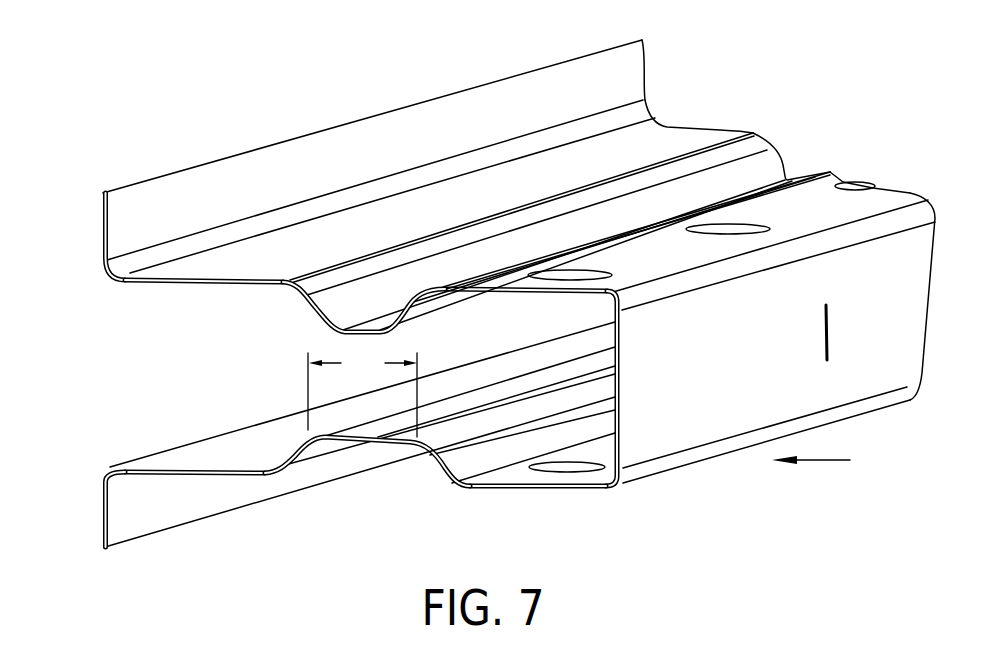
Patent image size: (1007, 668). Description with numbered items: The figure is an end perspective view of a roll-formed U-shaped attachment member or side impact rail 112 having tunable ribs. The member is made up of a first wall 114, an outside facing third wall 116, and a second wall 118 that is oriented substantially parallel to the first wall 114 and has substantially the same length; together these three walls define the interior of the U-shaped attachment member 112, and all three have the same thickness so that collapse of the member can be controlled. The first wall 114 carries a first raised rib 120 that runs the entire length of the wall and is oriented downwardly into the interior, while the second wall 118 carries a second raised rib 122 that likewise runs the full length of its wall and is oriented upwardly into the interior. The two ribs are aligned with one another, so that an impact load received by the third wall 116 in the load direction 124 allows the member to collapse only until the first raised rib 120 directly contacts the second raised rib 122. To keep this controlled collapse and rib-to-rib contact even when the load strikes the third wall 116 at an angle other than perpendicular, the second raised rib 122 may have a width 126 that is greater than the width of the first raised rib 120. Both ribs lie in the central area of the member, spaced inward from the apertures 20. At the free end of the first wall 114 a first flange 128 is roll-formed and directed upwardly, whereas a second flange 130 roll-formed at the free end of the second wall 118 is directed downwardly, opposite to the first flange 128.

The roll-formed U-shaped attachment member 112 is at (243, 113).
The first flange 128 is at (102, 246).
The first wall 114 is at (192, 280).
The first raised rib 120 is at (357, 329).
The width 126 is at (362, 394).
The third wall 116 is at (610, 468).
The second wall 118 is at (490, 483).
The second raised rib 122 is at (373, 440).
The second flange 130 is at (102, 522).
The apertures 20 is at (728, 229).
The load direction 124 is at (811, 473).